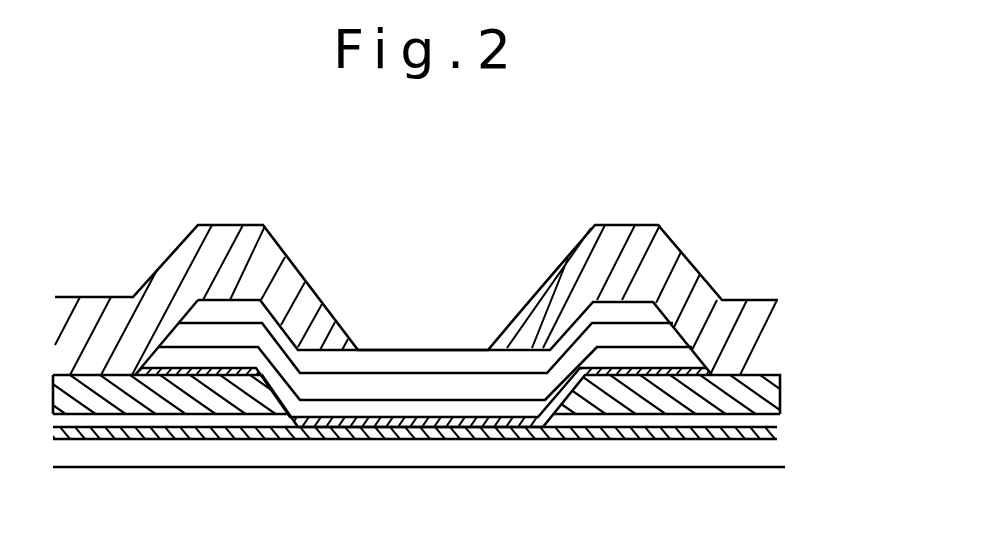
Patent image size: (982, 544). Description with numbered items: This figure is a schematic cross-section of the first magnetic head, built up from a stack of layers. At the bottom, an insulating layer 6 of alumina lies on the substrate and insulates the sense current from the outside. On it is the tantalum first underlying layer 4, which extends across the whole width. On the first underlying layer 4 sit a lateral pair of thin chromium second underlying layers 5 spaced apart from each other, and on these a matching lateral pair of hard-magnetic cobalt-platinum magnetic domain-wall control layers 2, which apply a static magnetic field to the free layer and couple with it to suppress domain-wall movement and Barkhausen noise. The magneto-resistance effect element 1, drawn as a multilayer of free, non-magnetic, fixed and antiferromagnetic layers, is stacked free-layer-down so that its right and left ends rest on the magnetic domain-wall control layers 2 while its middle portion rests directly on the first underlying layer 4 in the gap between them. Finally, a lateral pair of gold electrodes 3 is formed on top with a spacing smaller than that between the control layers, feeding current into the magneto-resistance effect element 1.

The magneto-resistance effect element 1 is at (533, 341).
The magnetic domain-wall control layer 2 is at (780, 400).
The electrode 3 is at (660, 253).
The first underlying layer 4 is at (770, 431).
The second underlying layer 5 is at (768, 419).
The insulating layer 6 is at (768, 457).